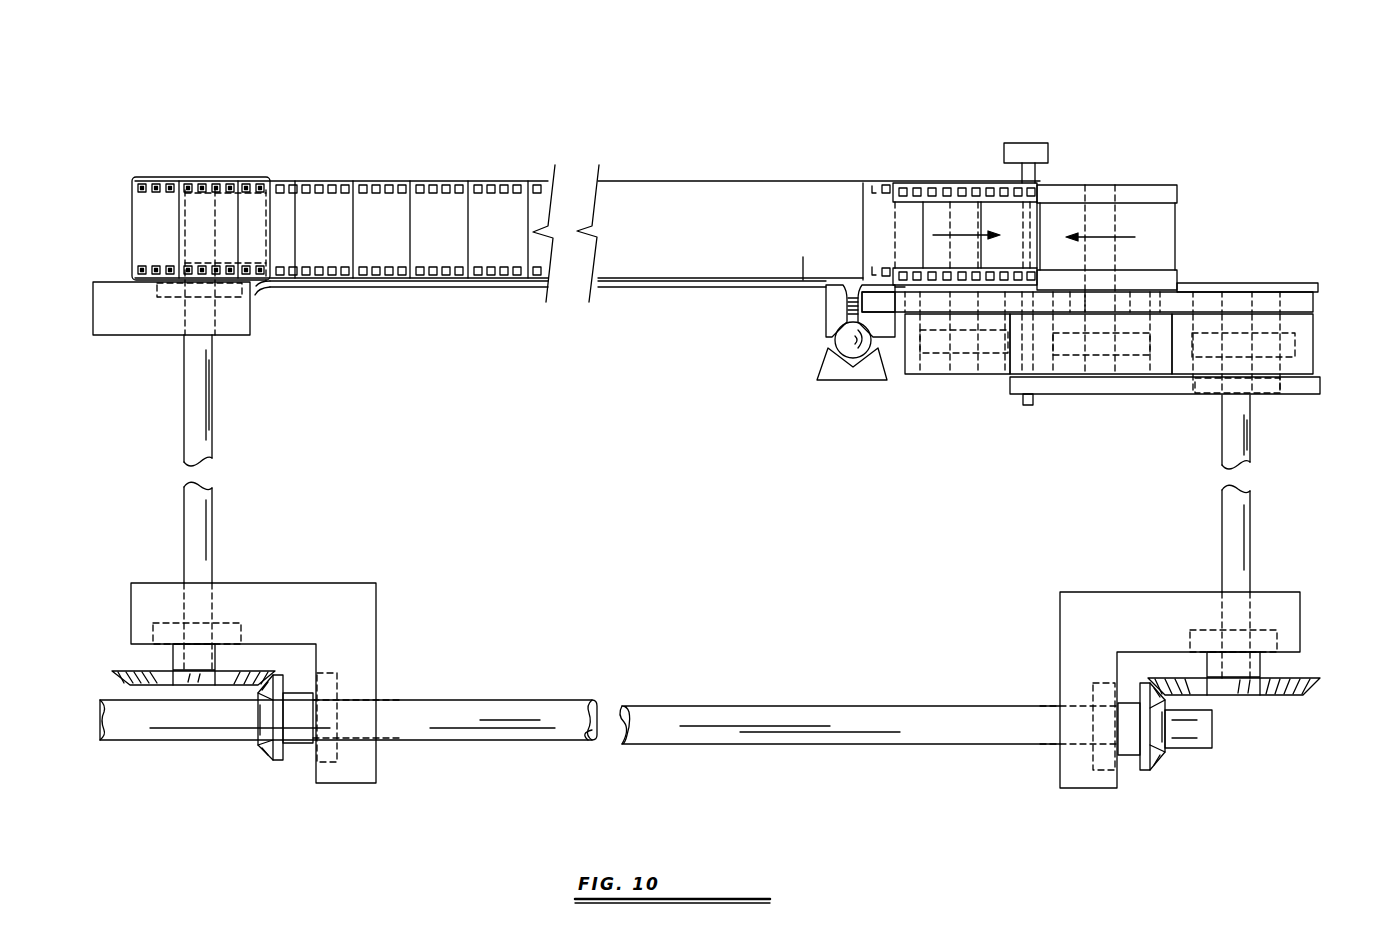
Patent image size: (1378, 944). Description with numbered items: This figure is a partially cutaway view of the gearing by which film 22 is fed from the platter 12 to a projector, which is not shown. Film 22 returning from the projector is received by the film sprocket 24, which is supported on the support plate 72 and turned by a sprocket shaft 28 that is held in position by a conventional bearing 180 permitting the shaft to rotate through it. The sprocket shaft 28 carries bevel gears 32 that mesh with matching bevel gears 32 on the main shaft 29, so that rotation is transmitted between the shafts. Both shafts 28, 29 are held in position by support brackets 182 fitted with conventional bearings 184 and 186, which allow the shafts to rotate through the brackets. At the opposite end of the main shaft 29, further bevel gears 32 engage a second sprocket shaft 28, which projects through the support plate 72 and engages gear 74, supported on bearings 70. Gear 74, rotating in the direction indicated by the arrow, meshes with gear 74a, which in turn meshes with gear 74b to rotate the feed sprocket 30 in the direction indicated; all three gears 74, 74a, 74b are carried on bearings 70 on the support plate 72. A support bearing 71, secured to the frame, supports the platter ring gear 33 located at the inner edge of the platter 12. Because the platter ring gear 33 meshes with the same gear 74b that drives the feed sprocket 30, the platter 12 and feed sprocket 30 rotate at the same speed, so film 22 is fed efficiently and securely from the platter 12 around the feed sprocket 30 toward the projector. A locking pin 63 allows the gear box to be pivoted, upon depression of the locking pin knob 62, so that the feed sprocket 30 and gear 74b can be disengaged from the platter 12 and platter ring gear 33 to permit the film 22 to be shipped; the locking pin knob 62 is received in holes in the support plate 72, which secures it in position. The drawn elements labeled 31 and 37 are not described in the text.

The platter 12 is at (434, 290).
The film 22 is at (446, 183).
The film sprocket 24 is at (199, 183).
The sprocket shaft 28 is at (213, 410).
The main shaft 29 is at (531, 703).
The feed sprocket 30 is at (934, 183).
The pressure block 31 is at (1140, 185).
The bevel gears 32 is at (115, 679).
The platter ring gear 33 is at (826, 308).
The cover plate 37 is at (1306, 283).
The locking pin knob 62 is at (1027, 143).
The locking pin 63 is at (1022, 398).
The bearings 70 is at (942, 350).
The support bearing 71 is at (828, 358).
The support plate 72 is at (250, 313).
The gear 74 is at (1314, 303).
The gear 74a is at (1135, 295).
The gear 74b is at (930, 296).
The bearing 180 is at (157, 295).
The support brackets 182 is at (332, 583).
The bearing 184 is at (241, 627).
The bearing 186 is at (330, 668).